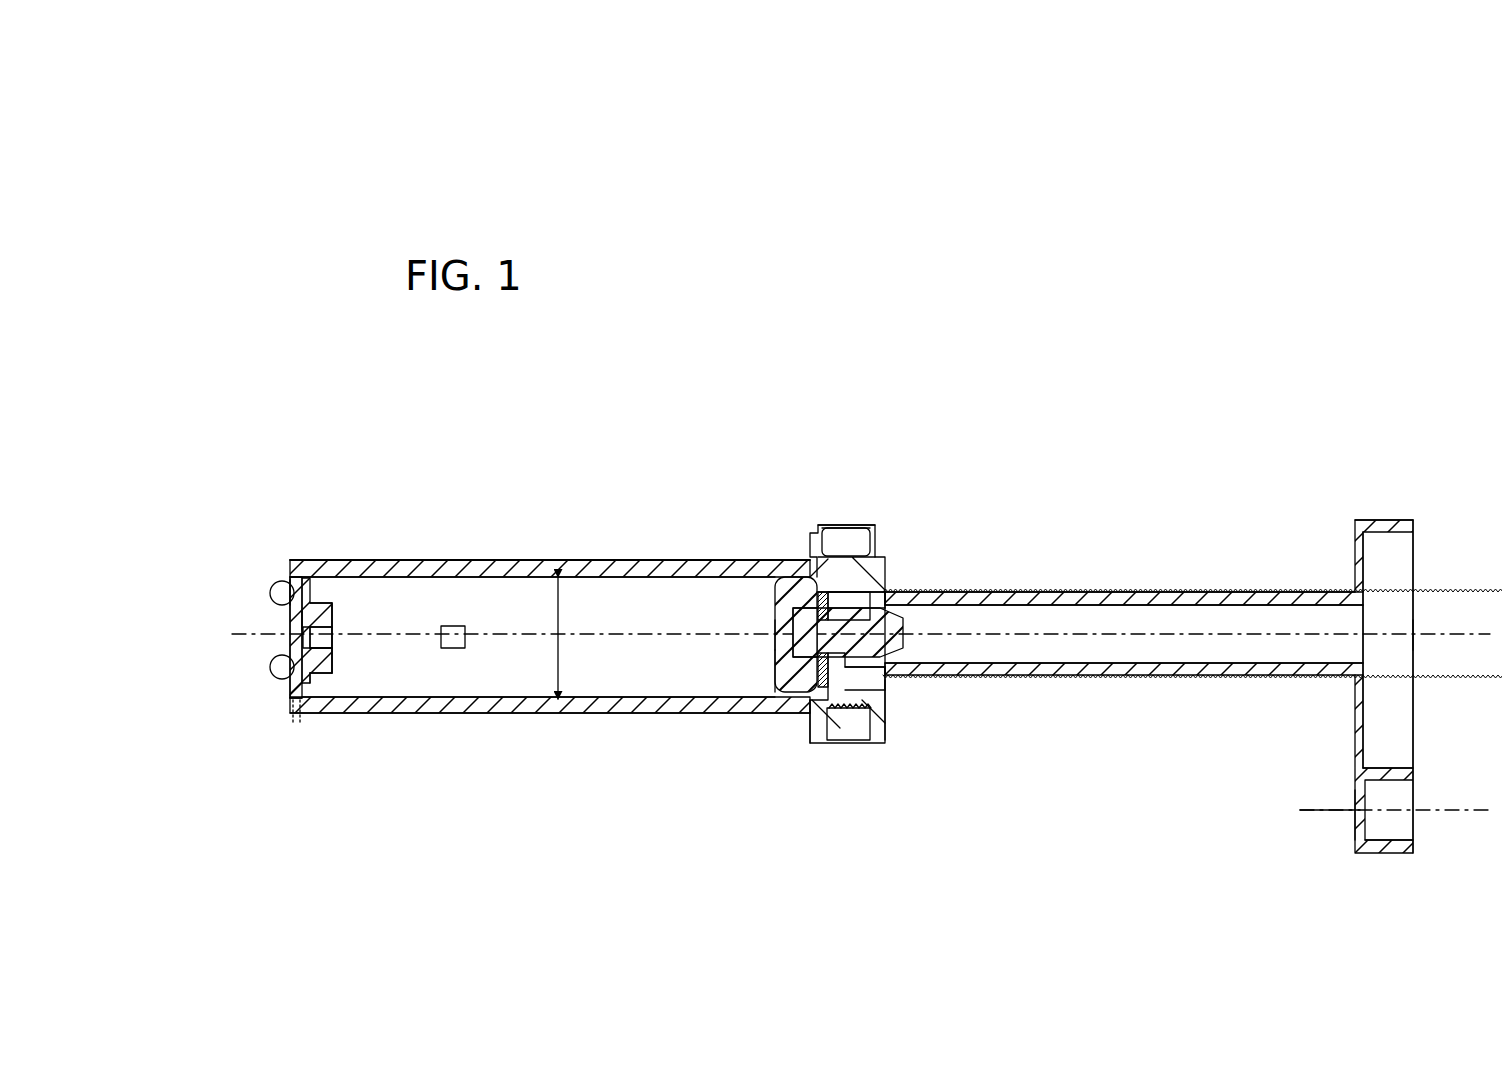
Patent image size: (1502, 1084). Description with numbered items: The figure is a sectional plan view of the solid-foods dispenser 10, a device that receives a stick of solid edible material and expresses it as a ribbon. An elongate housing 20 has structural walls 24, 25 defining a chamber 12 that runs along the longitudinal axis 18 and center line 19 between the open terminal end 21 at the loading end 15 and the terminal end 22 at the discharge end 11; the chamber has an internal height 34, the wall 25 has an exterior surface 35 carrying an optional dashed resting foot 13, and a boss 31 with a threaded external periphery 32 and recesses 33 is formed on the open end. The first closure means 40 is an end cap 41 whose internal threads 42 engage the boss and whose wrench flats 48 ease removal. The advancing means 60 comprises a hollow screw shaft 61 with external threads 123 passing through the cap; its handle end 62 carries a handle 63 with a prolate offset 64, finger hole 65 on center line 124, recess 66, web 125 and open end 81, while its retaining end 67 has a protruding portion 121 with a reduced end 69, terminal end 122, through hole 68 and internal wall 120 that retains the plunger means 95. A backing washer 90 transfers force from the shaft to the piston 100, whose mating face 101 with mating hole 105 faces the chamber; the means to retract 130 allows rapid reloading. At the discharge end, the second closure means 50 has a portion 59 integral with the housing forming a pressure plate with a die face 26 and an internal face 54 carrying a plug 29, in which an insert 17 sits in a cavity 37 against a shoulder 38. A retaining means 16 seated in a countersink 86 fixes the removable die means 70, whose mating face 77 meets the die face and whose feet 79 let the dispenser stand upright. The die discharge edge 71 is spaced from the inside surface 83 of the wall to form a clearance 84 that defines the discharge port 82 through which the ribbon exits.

The solid-foods dispenser 10 is at (892, 266).
The discharge end 11 is at (236, 728).
The chamber 12 is at (628, 653).
The resting foot 13 is at (298, 728).
The loading end 15 is at (992, 728).
The retaining means 16 is at (286, 637).
The insert 17 is at (462, 650).
The longitudinal axis 18 is at (497, 640).
The center line 19 is at (1427, 633).
The elongate housing 20 is at (492, 562).
The open terminal end 21 is at (888, 716).
The terminal end 22 is at (296, 600).
The structural walls 24 is at (468, 574).
The structural wall 25 is at (517, 713).
The die face 26 is at (292, 612).
The plug 29 is at (322, 626).
The boss 31 is at (810, 540).
The threaded external periphery 32 is at (846, 745).
The recesses 33 is at (888, 730).
The internal height 34 is at (560, 638).
The exterior surface 35 is at (526, 560).
The cavity 37 is at (338, 650).
The shoulder 38 is at (334, 652).
The first closure means 40 is at (1102, 370).
The end cap 41 is at (830, 597).
The internal threads 42 is at (808, 712).
The wrench flats 48 is at (848, 598).
The second closure means 50 is at (246, 679).
The internal face 54 is at (370, 626).
The portion 59 is at (316, 598).
The advancing means 60 is at (1302, 745).
The screw shaft 61 is at (1152, 592).
The handle end 62 is at (1352, 502).
The handle 63 is at (1357, 541).
The prolate offset 64 is at (1365, 812).
The finger hole 65 is at (1400, 826).
The recess 66 is at (1395, 677).
The retaining end 67 is at (977, 532).
The through hole 68 is at (1162, 663).
The reduced end 69 is at (862, 604).
The die means 70 is at (291, 596).
The discharge edge 71 is at (298, 695).
The mating face 77 is at (332, 662).
The feet 79 is at (290, 605).
The open end 81 is at (1413, 578).
The discharge port 82 is at (291, 690).
The inside surface 83 is at (324, 658).
The clearance 84 is at (300, 688).
The countersink 86 is at (292, 622).
The backing washer 90 is at (823, 600).
The plunger means 95 is at (778, 655).
The piston 100 is at (778, 580).
The mating face 101 is at (752, 676).
The mating hole 105 is at (793, 612).
The internal wall 120 is at (945, 615).
The protruding portion 121 is at (834, 604).
The terminal end 122 is at (818, 672).
The threads 123 is at (1052, 592).
The center line 124 is at (1350, 815).
The web 125 is at (1405, 773).
The means to retract 130 is at (896, 765).